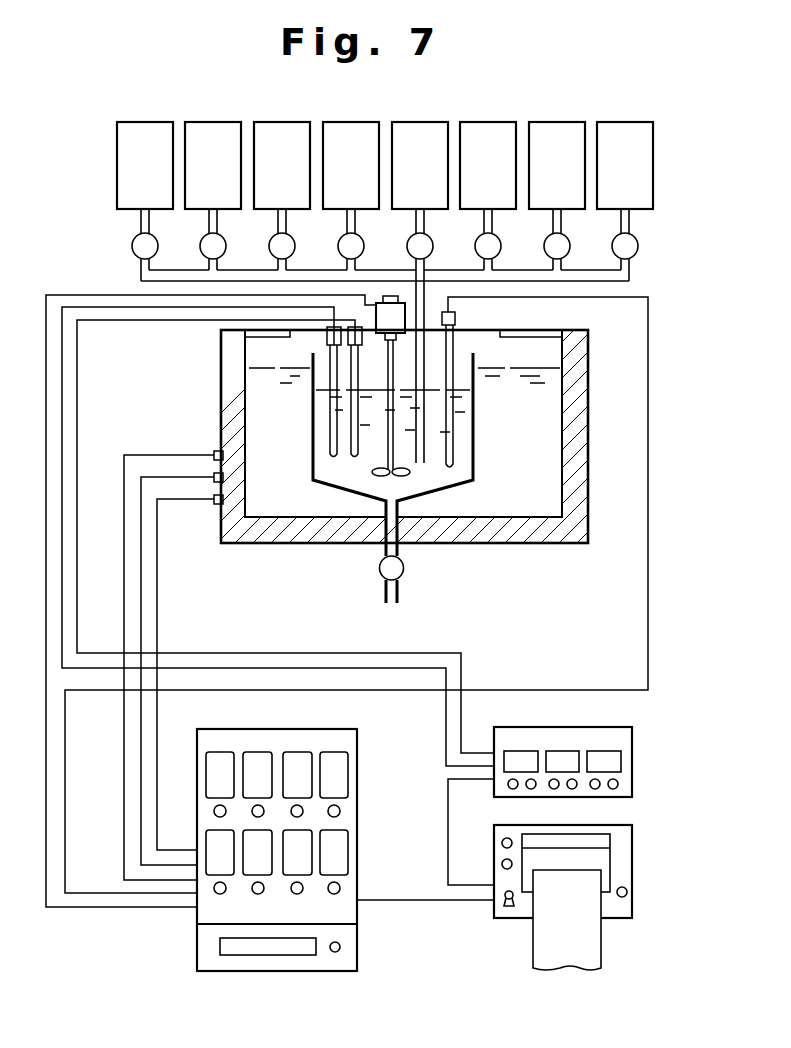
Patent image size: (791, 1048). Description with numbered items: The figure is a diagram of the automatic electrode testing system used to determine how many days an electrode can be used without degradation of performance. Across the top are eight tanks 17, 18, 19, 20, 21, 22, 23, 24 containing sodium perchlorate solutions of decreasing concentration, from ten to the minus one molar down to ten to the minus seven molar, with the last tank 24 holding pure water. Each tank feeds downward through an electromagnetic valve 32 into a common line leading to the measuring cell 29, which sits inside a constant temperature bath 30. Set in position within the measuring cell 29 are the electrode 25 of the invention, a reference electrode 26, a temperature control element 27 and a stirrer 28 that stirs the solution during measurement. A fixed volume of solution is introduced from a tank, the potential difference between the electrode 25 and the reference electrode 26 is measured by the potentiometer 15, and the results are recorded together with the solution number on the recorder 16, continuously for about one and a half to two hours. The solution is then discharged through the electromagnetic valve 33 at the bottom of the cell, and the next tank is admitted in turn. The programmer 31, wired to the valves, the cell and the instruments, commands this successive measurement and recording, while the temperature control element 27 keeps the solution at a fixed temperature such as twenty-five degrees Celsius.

The potentiometer 15 is at (642, 761).
The recorder 16 is at (642, 872).
The tank 17 is at (145, 165).
The tank 18 is at (213, 165).
The tank 19 is at (282, 165).
The tank 20 is at (351, 165).
The tank 21 is at (420, 165).
The tank 22 is at (488, 165).
The tank 23 is at (557, 165).
The tank 24 is at (625, 165).
The electrode 25 is at (357, 419).
The reference electrode 26 is at (328, 450).
The temperature control element 27 is at (453, 412).
The stirrer 28 is at (403, 474).
The measuring cell 29 is at (474, 449).
The constant temperature bath 30 is at (479, 546).
The programmer 31 is at (366, 786).
The electromagnetic valve 32 is at (141, 244).
The electromagnetic valve 33 is at (380, 571).